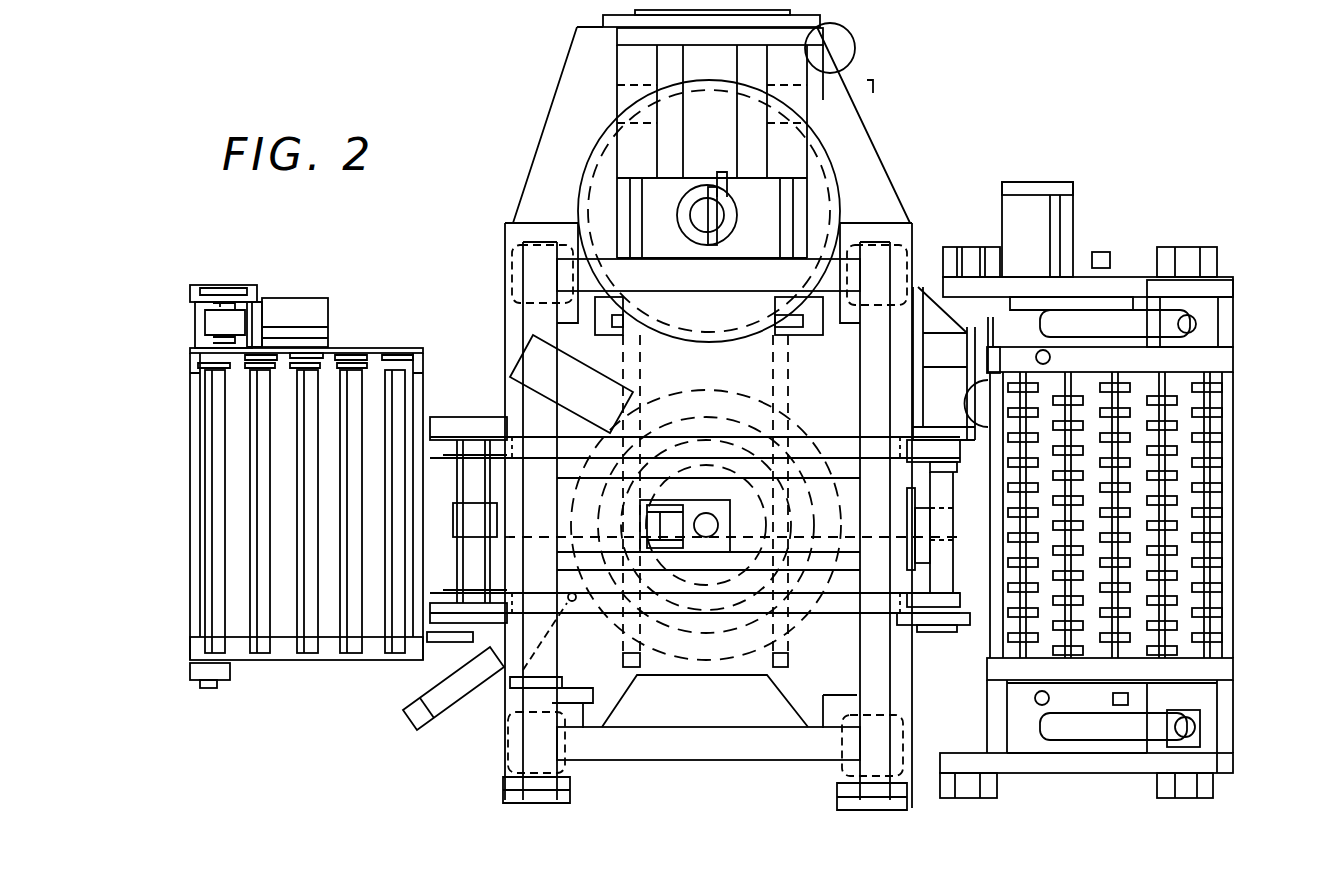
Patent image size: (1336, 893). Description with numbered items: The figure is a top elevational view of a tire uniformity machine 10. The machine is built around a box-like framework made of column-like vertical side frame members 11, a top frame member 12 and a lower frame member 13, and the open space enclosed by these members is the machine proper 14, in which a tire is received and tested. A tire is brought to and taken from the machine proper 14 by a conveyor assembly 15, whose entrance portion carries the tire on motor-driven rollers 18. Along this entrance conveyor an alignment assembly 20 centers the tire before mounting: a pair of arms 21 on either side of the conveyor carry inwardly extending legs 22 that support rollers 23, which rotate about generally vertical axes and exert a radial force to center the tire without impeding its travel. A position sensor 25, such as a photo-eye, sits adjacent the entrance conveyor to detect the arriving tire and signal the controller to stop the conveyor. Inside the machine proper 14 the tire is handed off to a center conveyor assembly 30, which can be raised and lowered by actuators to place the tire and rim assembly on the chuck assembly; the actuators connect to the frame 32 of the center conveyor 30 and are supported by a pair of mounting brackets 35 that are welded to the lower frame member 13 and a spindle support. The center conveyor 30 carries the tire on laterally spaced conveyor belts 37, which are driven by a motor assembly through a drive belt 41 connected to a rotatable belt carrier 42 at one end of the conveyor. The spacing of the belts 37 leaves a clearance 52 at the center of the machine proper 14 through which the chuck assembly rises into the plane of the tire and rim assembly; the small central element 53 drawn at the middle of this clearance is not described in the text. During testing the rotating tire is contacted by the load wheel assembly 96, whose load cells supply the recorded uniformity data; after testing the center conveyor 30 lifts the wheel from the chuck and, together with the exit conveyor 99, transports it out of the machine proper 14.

The tire uniformity machine 10 is at (516, 130).
The vertical side frame members 11 is at (512, 268).
The top frame member 12 is at (710, 750).
The lower frame member 13 is at (515, 342).
The machine proper 14 is at (798, 394).
The conveyor assembly 15 is at (1236, 510).
The rollers 18 is at (1216, 464).
The alignment assembly 20 is at (1066, 290).
The arms 21 is at (1105, 325).
The legs 22 is at (1040, 350).
The rollers 23 is at (1038, 352).
The position sensor 25 is at (1102, 262).
The center conveyor assembly 30 is at (929, 630).
The frame 32 is at (942, 577).
The mounting brackets 35 is at (915, 505).
The conveyor belts 37 is at (806, 452).
The drive belt 41 is at (445, 645).
The belt carrier 42 is at (446, 414).
The clearance 52 is at (703, 537).
The shaft 53 is at (707, 508).
The load wheel assembly 96 is at (842, 163).
The exit conveyor 99 is at (385, 336).